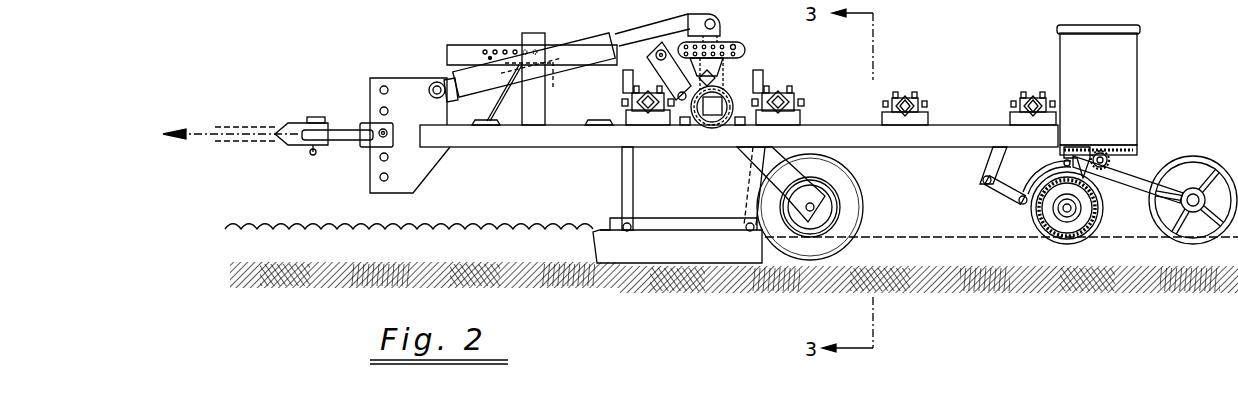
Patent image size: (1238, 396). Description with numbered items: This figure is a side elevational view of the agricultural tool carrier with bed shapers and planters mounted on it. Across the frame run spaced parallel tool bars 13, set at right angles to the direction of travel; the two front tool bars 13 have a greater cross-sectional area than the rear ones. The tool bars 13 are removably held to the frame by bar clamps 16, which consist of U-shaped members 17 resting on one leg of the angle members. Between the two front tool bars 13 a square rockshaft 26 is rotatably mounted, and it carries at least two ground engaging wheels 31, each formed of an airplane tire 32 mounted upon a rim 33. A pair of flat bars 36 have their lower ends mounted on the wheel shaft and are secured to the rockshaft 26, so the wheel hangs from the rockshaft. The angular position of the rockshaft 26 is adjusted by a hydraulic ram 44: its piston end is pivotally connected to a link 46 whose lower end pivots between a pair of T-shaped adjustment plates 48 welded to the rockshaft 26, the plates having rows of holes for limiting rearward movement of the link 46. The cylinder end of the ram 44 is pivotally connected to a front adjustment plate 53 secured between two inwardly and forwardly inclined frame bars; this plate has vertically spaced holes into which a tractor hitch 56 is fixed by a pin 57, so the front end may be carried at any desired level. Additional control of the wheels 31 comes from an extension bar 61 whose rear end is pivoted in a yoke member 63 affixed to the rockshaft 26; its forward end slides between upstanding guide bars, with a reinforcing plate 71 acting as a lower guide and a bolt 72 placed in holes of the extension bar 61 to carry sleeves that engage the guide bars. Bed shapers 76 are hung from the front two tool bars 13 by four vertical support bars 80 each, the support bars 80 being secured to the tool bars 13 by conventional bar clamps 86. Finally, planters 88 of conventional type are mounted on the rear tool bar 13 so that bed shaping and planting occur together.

The tool bars 13 is at (641, 112).
The bar clamps 16 is at (906, 94).
The U-shaped members 17 is at (800, 122).
The rockshaft 26 is at (715, 100).
The ground engaging wheels 31 is at (868, 178).
The airplane tires 32 is at (852, 213).
The rim 33 is at (838, 198).
The flat bars 36 is at (742, 153).
The hydraulic ram 44 is at (491, 85).
The link 46 is at (719, 31).
The T-shaped adjustment plates 48 is at (745, 46).
The front adjustment plate 53 is at (420, 170).
The tractor hitch 56 is at (355, 140).
The pin 57 is at (371, 124).
The extension bar 61 is at (485, 46).
The yoke member 63 is at (690, 80).
The reinforcing plate 71 is at (518, 112).
The bolt 72 is at (536, 83).
The bed shapers 76 is at (703, 213).
The vertical support bars 80 is at (624, 173).
The bar clamps 86 is at (633, 92).
The planters 88 is at (1146, 58).